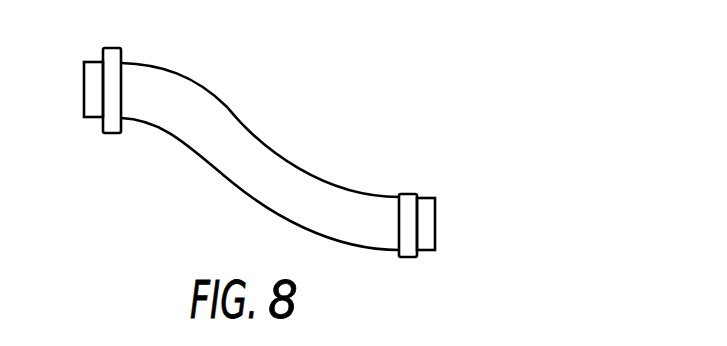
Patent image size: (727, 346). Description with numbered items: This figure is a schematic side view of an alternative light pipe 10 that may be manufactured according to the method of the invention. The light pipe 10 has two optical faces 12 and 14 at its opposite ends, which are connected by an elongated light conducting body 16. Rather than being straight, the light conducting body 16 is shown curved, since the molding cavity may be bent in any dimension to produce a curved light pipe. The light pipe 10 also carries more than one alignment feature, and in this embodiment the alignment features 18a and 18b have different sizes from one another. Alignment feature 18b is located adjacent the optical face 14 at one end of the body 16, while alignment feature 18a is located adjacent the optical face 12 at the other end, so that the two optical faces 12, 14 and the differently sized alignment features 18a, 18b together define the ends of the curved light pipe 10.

The light pipe 10 is at (216, 216).
The optical face 12 is at (437, 221).
The optical face 14 is at (83, 92).
The elongated light conducting body 16 is at (227, 105).
The alignment feature 18a is at (408, 193).
The alignment feature 18b is at (117, 48).